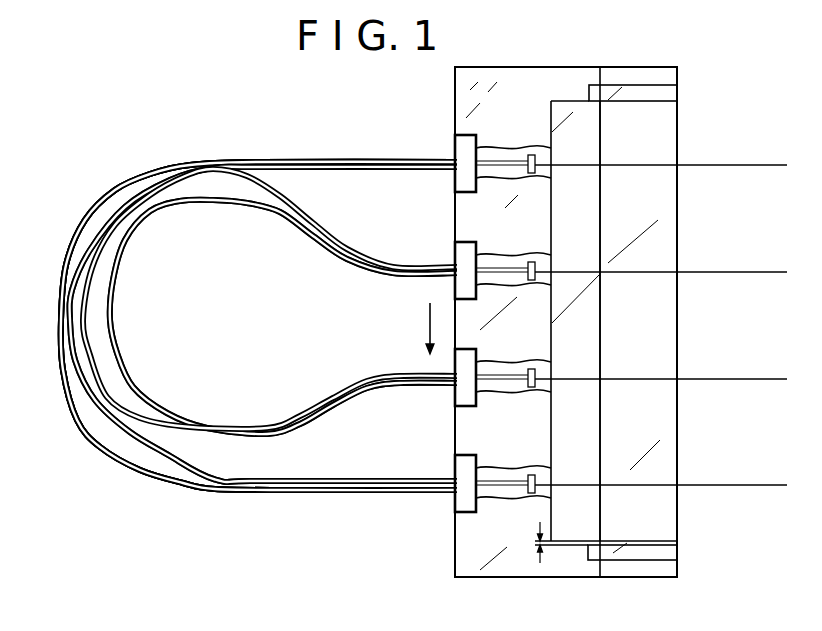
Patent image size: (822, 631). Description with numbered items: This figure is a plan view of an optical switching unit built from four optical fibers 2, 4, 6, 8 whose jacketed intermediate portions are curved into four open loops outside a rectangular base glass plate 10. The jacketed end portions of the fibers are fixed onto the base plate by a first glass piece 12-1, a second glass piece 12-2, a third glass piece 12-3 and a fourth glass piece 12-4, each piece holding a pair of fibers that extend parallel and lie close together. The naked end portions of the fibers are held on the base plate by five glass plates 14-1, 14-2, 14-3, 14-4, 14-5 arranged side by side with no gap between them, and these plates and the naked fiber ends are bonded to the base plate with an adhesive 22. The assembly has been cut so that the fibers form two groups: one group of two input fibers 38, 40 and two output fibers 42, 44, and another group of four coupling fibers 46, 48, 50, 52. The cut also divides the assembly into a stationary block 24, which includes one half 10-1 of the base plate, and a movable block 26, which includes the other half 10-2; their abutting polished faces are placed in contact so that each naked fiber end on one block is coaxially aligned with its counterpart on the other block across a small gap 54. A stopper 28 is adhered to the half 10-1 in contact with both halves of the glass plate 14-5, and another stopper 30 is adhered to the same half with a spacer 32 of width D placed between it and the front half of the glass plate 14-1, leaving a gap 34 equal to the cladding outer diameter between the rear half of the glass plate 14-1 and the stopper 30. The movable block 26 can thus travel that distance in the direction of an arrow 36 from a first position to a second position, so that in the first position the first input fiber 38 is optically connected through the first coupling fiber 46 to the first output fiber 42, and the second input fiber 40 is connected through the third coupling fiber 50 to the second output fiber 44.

The optical fiber 2 is at (96, 441).
The optical fiber 4 is at (135, 441).
The optical fiber 6 is at (155, 394).
The optical fiber 8 is at (81, 229).
The base glass plate 10 is at (455, 90).
The half of base glass plate 10-1 is at (627, 578).
The half of base glass plate 10-2 is at (506, 578).
The first glass piece 12-1 is at (459, 502).
The second glass piece 12-2 is at (459, 394).
The third glass piece 12-3 is at (458, 257).
The fourth glass piece 12-4 is at (458, 150).
The glass plate 14-1 is at (674, 507).
The glass plate 14-2 is at (674, 434).
The glass plate 14-3 is at (674, 325).
The glass plate 14-4 is at (674, 218).
The glass plate 14-5 is at (674, 128).
The adhesive 22 is at (513, 154).
The block 24 is at (631, 67).
The block 26 is at (534, 67).
The stopper 28 is at (670, 94).
The stopper 30 is at (670, 554).
The spacer 32 is at (618, 541).
The gap 34 is at (540, 555).
The arrow 36 is at (428, 322).
The first input optical fiber 38 is at (770, 484).
The second input optical fiber 40 is at (770, 378).
The first output optical fiber 42 is at (770, 271).
The second output optical fiber 44 is at (770, 163).
The first coupling fiber 46 is at (212, 204).
The coupling fiber 48 is at (311, 159).
The third coupling fiber 50 is at (341, 169).
The coupling fiber 52 is at (111, 195).
The gap 54 is at (602, 336).